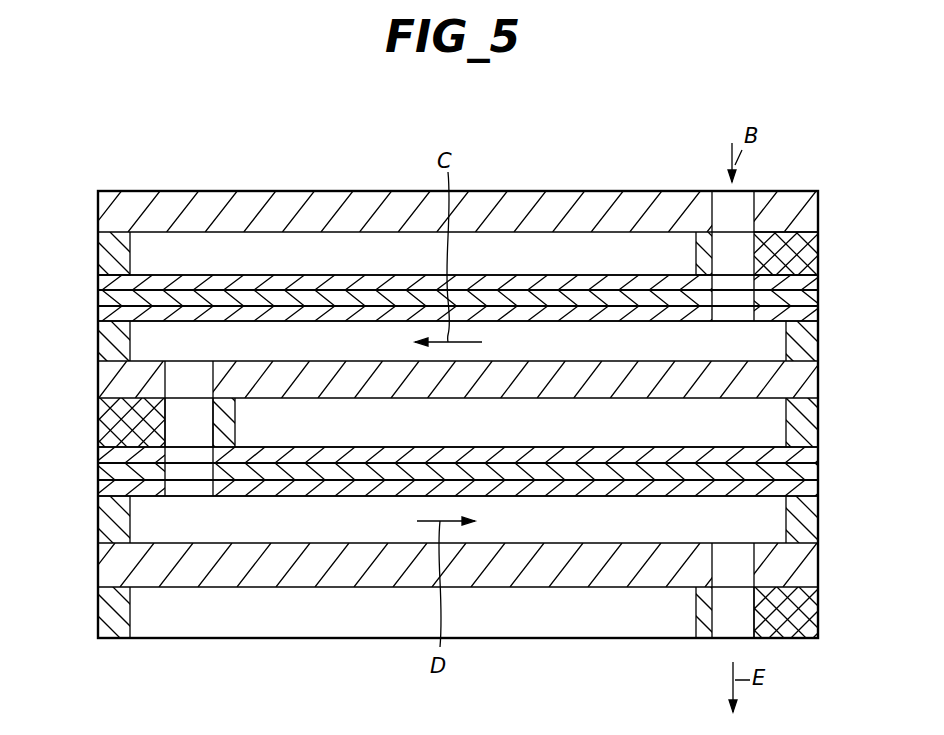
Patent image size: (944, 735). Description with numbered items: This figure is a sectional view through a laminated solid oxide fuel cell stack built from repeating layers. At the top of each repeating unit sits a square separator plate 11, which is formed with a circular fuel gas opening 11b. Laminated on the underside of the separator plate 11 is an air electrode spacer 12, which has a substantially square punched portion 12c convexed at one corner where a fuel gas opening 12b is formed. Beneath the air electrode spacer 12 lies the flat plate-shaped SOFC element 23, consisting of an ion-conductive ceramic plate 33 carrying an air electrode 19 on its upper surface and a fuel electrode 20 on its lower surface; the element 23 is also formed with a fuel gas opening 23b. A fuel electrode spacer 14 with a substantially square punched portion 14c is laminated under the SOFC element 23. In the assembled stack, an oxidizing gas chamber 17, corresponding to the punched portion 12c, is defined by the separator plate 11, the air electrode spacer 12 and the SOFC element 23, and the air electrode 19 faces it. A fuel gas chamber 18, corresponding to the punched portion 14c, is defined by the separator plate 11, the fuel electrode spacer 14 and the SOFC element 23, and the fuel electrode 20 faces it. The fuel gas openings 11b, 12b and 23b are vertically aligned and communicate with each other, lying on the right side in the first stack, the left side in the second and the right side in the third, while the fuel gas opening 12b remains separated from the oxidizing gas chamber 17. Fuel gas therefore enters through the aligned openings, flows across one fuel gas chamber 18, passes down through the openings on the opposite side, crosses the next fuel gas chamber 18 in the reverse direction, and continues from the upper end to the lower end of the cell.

The separator plate 11 is at (563, 205).
The fuel gas opening 11b is at (745, 212).
The air electrode spacer 12 is at (818, 242).
The fuel gas opening 12b is at (745, 248).
The punched portion 12c is at (130, 250).
The fuel electrode spacer 14 is at (812, 340).
The punched portion 14c is at (98, 343).
The oxidizing gas chamber 17 is at (392, 265).
The fuel gas chamber 18 is at (588, 356).
The air electrode 19 is at (808, 282).
The fuel electrode 20 is at (810, 313).
The flat plate-shaped SOFC element 23 is at (96, 273).
The fuel gas opening 23b is at (788, 240).
The ion-conductive ceramic plate 33 is at (808, 298).